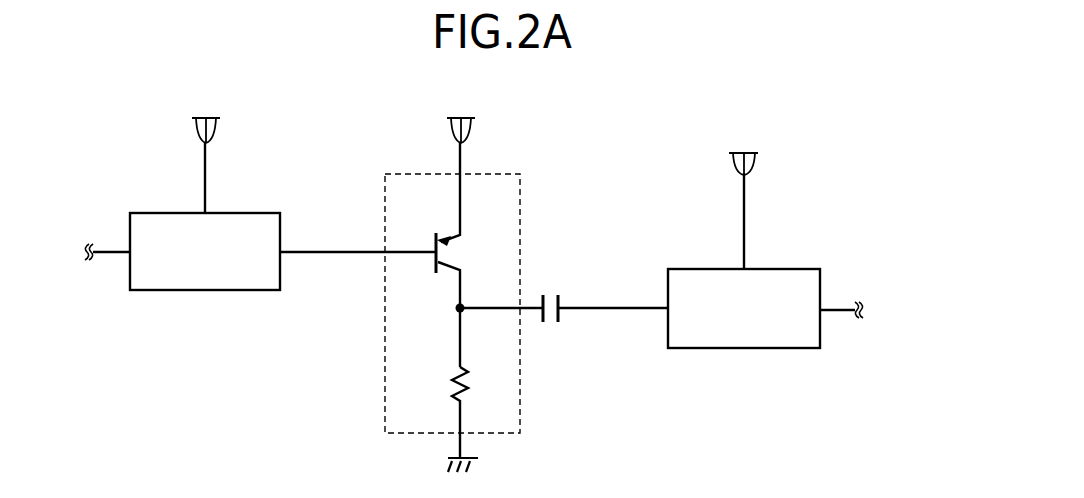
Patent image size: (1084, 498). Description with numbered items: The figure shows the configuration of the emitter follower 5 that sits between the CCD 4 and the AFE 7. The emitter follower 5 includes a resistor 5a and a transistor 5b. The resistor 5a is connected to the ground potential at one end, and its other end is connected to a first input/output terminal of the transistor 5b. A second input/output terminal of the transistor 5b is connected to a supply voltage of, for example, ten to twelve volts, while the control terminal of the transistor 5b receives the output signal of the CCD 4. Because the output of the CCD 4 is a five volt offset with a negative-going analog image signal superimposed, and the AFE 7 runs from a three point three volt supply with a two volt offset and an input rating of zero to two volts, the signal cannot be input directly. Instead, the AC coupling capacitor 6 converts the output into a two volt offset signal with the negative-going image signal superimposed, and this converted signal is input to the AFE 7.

The CCD 4 is at (251, 213).
The emitter follower 5 is at (478, 282).
The resistor 5a is at (455, 370).
The transistor 5b is at (451, 268).
The AC coupling capacitor 6 is at (553, 295).
The AFE 7 is at (794, 269).